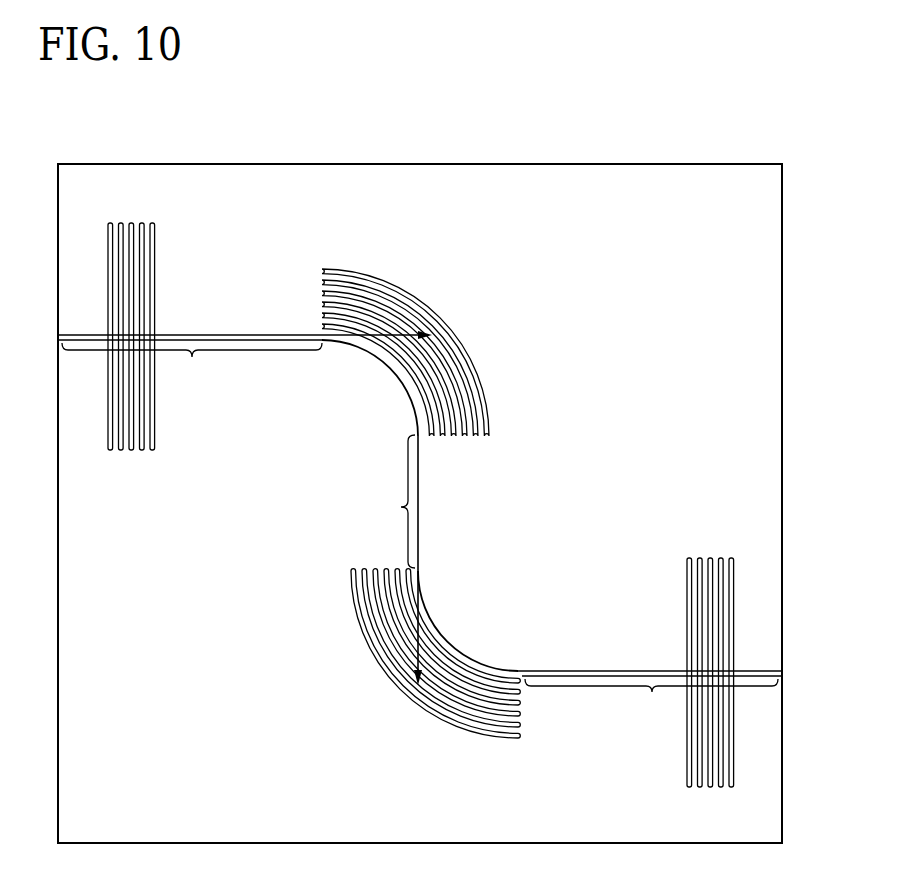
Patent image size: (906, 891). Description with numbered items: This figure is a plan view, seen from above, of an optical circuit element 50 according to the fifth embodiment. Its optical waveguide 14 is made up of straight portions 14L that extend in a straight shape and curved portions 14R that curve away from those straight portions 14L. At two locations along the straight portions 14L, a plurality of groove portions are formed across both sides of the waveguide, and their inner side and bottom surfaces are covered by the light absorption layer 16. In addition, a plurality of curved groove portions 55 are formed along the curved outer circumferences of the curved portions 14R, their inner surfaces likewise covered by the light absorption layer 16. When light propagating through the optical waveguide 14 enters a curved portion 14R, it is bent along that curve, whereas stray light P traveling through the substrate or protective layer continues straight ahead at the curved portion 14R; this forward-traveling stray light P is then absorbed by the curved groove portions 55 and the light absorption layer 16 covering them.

The optical circuit element 50 is at (553, 150).
The optical waveguide 14 is at (420, 488).
The straight portions 14L is at (420, 532).
The curved portions 14R is at (394, 372).
The curved groove portions 55 is at (131, 452).
The light absorption layer 16 is at (156, 432).
The stray light P is at (396, 337).